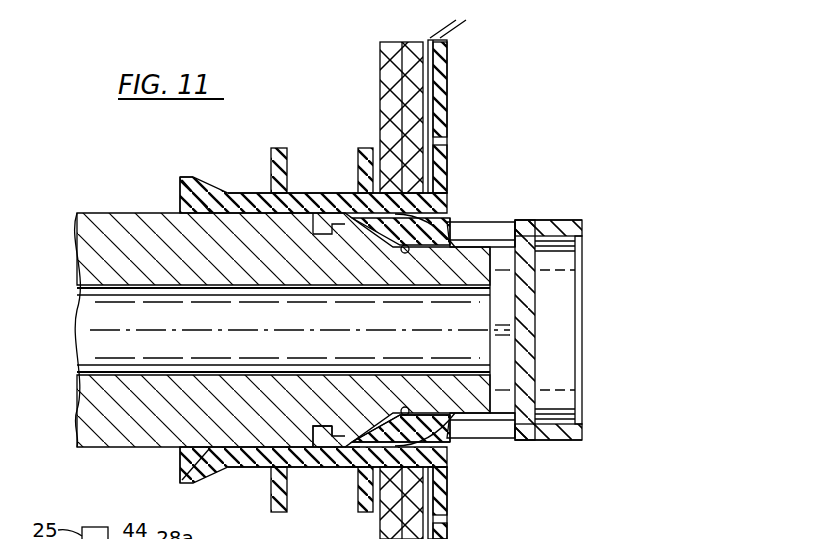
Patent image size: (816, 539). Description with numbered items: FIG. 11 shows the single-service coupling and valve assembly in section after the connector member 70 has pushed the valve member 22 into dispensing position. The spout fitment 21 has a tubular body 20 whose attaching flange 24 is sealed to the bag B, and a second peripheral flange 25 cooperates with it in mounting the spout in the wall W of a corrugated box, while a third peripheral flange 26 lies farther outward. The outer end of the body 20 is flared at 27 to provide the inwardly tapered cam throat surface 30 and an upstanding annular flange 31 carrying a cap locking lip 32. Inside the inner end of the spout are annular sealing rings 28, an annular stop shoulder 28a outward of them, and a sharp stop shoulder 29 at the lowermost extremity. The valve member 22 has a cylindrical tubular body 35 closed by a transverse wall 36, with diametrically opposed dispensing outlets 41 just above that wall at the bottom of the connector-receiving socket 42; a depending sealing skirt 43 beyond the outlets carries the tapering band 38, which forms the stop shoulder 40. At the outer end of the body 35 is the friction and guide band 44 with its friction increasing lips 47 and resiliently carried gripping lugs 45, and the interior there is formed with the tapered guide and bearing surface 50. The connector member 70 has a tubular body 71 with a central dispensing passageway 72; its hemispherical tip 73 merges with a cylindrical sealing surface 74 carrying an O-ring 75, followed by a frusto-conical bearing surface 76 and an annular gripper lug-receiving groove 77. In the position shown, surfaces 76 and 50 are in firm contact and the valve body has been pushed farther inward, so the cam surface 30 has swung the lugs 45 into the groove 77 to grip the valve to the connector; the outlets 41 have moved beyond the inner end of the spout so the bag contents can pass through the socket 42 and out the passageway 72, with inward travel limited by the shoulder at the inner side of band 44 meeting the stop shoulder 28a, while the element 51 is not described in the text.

The tubular body 20 is at (250, 193).
The spout fitment 21 is at (300, 195).
The valve member 22 is at (553, 441).
The attaching flange 24 is at (447, 100).
The second peripheral flange 25 is at (362, 148).
The third peripheral flange 26 is at (278, 148).
The flared outer end 27 is at (220, 478).
The annular sealing rings 28 is at (380, 415).
The annular stop shoulder 28a is at (452, 456).
The annular stop shoulder 29 is at (450, 430).
The cam throat surface 30 is at (185, 200).
The upstanding annular flange 31 is at (180, 455).
The cap locking lip 32 is at (182, 178).
The tubular body 35 is at (440, 432).
The transverse wall 36 is at (540, 345).
The tapering band 38 is at (577, 222).
The stop shoulder 40 is at (560, 220).
The dispensing outlets 41 is at (508, 238).
The connector-receiving socket 42 is at (540, 393).
The sealing skirt 43 is at (540, 262).
The friction and guide band 44 is at (350, 470).
The gripping lugs 45 is at (330, 412).
The friction increasing lips 47 is at (345, 447).
The guide and bearing surface 50 is at (360, 412).
The gasket ring 51 is at (480, 230).
The connector member 70 is at (128, 210).
The connector body 71 is at (85, 243).
The dispensing passageway 72 is at (85, 345).
The tip 73 is at (490, 428).
The cylindrical sealing surface 74 is at (410, 245).
The O-ring 75 is at (425, 214).
The frusto-conical bearing surface 76 is at (355, 205).
The gripper lug-receiving groove 77 is at (318, 428).
The wall W is at (380, 68).
The bag B is at (447, 46).